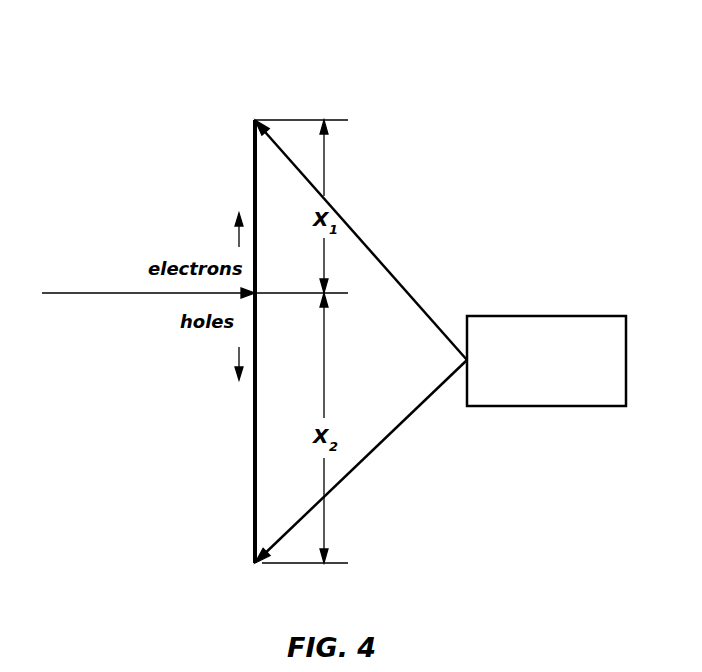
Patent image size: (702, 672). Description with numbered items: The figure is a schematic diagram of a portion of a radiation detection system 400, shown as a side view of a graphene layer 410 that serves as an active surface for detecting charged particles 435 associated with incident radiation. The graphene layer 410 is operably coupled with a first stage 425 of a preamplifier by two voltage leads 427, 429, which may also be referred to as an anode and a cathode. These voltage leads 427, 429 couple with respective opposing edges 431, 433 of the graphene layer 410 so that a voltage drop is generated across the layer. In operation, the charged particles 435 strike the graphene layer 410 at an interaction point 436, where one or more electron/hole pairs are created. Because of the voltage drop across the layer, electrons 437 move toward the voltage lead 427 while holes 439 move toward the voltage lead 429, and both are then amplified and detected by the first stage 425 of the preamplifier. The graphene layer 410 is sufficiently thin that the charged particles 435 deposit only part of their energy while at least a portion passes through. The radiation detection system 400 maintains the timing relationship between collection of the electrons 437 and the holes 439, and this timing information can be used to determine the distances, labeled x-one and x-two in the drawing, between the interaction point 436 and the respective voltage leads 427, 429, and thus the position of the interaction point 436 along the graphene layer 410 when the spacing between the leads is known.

The radiation detection system 400 is at (478, 88).
The graphene layer 410 is at (253, 510).
The first stage of preamplifier 425 is at (553, 316).
The voltage lead 427 is at (367, 243).
The voltage lead 429 is at (373, 452).
The edge of graphene layer 431 is at (255, 120).
The edge of graphene layer 433 is at (255, 563).
The charged particles 435 is at (78, 296).
The interaction point 436 is at (258, 295).
The electrons 437 is at (238, 240).
The holes 439 is at (237, 357).